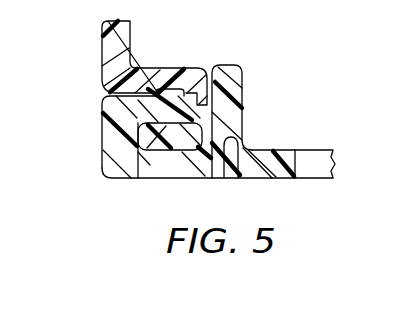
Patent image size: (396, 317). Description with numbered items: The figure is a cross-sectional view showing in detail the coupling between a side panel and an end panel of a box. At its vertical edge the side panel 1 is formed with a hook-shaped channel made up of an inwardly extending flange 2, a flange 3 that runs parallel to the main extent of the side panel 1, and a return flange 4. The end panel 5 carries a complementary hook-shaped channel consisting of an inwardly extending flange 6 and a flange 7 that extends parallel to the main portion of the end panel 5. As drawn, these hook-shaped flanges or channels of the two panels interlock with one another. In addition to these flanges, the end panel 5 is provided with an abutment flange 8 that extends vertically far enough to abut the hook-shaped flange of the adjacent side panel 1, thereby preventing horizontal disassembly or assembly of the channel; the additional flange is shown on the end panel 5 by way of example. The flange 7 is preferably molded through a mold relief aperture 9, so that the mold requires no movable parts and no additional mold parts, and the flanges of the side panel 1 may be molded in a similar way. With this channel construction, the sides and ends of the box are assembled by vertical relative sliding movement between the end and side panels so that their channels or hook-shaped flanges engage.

The side panel 1 is at (84, 50).
The inwardly extending flange 2 is at (162, 78).
The flange 3 is at (196, 98).
The return flange 4 is at (173, 140).
The end panel 5 is at (267, 185).
The inwardly extending flange 6 is at (102, 125).
The flange 7 is at (117, 100).
The abutment flange 8 is at (225, 167).
The mold relief aperture 9 is at (147, 172).